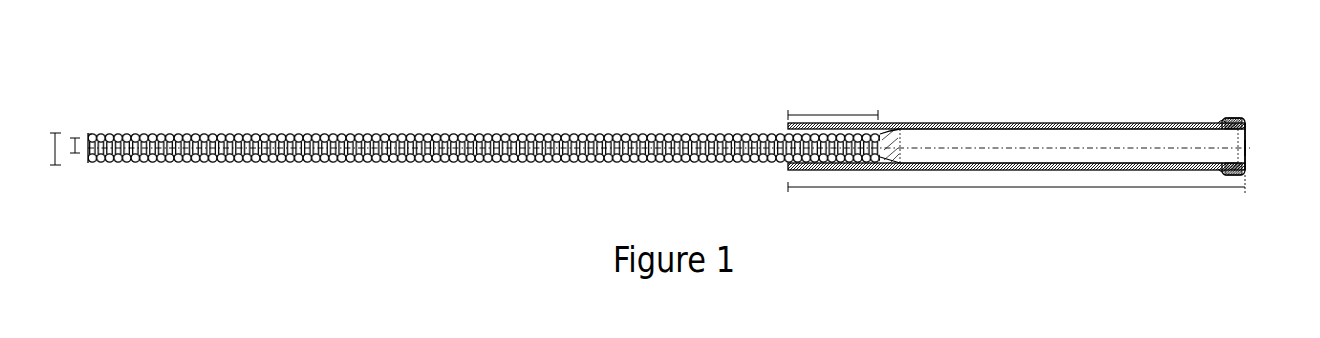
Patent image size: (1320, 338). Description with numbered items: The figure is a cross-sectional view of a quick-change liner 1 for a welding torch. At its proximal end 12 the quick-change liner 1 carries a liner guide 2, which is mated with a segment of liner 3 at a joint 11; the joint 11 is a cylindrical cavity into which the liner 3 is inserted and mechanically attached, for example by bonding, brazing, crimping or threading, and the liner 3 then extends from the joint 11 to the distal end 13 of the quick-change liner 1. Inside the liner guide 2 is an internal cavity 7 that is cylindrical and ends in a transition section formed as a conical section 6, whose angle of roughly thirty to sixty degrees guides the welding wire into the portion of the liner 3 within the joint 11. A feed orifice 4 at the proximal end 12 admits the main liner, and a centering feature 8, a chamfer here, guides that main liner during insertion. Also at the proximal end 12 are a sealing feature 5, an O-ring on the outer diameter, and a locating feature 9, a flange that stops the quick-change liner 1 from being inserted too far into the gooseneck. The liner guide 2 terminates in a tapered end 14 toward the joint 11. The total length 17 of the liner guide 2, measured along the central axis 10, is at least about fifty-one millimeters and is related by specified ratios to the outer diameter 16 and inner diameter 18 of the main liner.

The quick-change liner 1 is at (618, 117).
The liner guide 2 is at (999, 126).
The liner 3 is at (219, 161).
The feed orifice 4 is at (1255, 108).
The sealing feature 5 is at (1228, 112).
The conical section 6 is at (892, 135).
The internal cavity 7 is at (1075, 140).
The centering feature 8 is at (1247, 128).
The locating feature 9 is at (1221, 118).
The central axis 10 is at (1268, 146).
The joint 11 is at (826, 122).
The proximal end 12 is at (1233, 62).
The distal end 13 is at (58, 90).
The tapered end 14 is at (1246, 178).
The outer diameter of the main liner 16 is at (50, 137).
The total length of the liner guide 17 is at (1160, 188).
The inner diameter of the main liner 18 is at (72, 138).